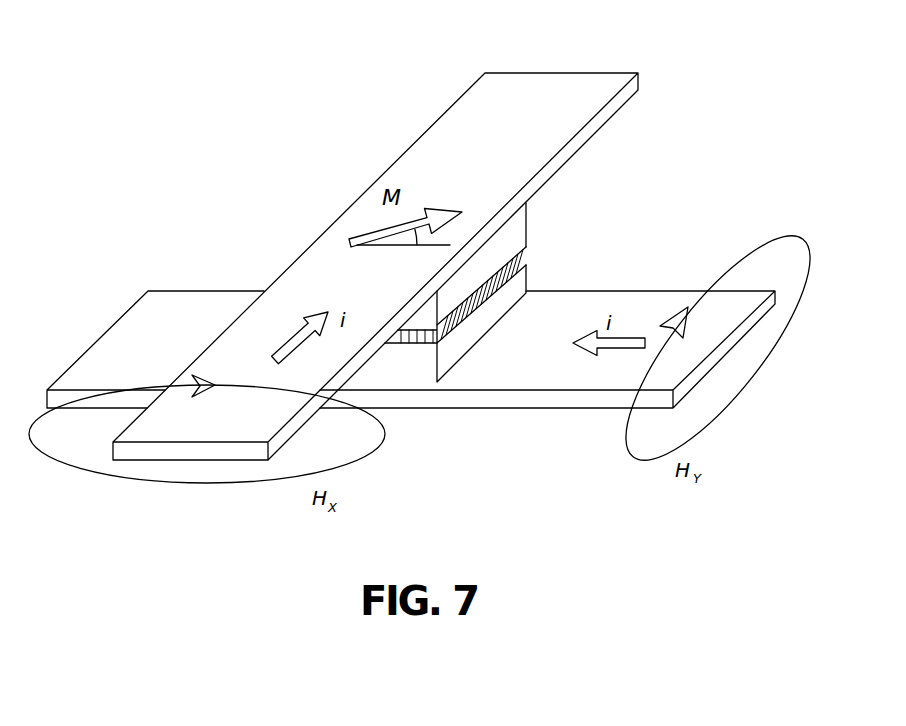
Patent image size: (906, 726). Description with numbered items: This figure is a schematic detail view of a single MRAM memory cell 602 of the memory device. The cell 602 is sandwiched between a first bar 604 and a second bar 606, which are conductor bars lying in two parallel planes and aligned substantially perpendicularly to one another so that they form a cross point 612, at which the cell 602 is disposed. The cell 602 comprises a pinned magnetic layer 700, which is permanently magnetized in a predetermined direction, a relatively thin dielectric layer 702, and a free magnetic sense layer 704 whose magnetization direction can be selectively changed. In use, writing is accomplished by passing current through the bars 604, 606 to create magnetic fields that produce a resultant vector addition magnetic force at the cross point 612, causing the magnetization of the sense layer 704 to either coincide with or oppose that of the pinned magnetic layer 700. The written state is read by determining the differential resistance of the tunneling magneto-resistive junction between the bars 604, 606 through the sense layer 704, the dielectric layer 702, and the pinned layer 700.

The cell 602 is at (544, 277).
The first bar 604 is at (582, 92).
The second bar 606 is at (138, 327).
The cross point 612 is at (403, 376).
The pinned magnetic layer 700 is at (472, 332).
The dielectric layer 702 is at (505, 278).
The free magnetic sense layer 704 is at (515, 229).